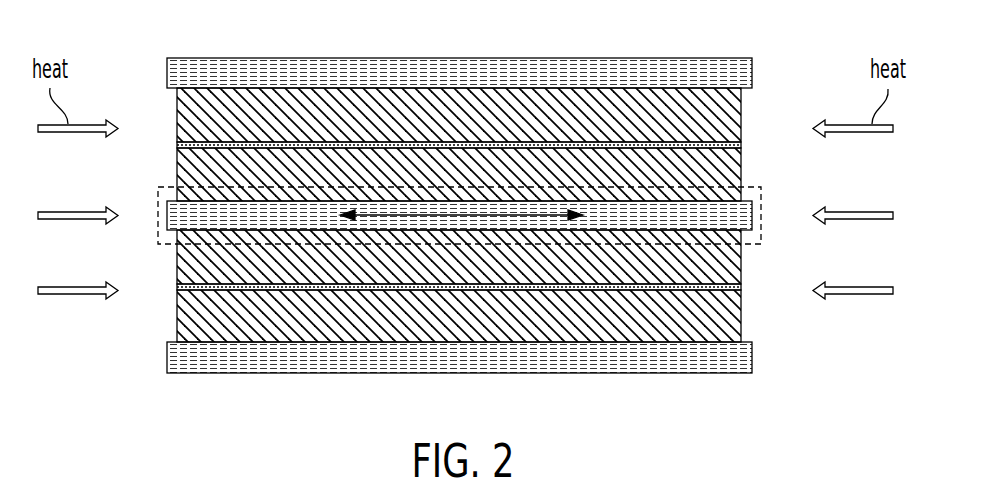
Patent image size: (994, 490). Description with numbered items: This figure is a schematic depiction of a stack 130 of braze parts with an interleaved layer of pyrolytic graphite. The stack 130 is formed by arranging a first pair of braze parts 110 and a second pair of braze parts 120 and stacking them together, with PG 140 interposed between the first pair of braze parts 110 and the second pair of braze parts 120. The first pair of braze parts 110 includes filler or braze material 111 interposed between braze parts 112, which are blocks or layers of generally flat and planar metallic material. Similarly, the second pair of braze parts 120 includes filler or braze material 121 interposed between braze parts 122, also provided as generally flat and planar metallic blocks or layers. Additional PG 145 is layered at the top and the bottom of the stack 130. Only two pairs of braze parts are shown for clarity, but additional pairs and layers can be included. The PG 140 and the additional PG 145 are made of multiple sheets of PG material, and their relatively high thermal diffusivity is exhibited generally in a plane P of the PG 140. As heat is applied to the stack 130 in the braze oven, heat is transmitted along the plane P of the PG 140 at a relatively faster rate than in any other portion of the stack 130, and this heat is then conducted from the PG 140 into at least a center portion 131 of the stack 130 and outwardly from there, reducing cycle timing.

The additional PG 145 is at (188, 72).
The first pair of braze parts 110 is at (168, 124).
The filler or braze material 111 is at (177, 144).
The braze parts 112 is at (725, 117).
The stack 130 is at (468, 126).
The PG 140 is at (193, 217).
The plane P is at (462, 216).
The braze parts 122 is at (723, 265).
The filler or braze material 121 is at (177, 288).
The second pair of braze parts 120 is at (168, 324).
The center portion 131 is at (404, 259).